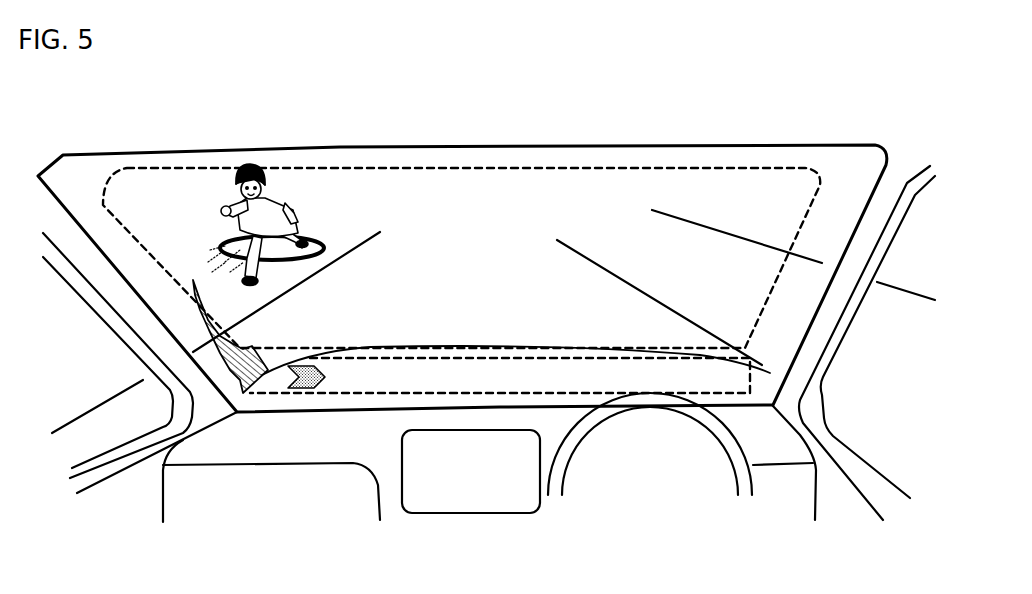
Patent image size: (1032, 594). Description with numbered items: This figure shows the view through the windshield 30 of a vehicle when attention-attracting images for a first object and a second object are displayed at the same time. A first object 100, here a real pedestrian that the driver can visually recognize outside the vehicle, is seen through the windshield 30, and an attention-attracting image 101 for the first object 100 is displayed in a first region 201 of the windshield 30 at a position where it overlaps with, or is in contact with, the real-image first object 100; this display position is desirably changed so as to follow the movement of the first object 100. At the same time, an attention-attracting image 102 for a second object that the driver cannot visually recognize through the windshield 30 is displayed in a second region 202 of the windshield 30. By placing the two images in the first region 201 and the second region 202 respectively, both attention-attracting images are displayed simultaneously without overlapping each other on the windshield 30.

The windshield 30 is at (490, 300).
The first object 100 is at (257, 167).
The attention-attracting image 101 is at (322, 237).
The attention-attracting image 102 is at (310, 358).
The first region 201 is at (668, 178).
The second region 202 is at (750, 376).